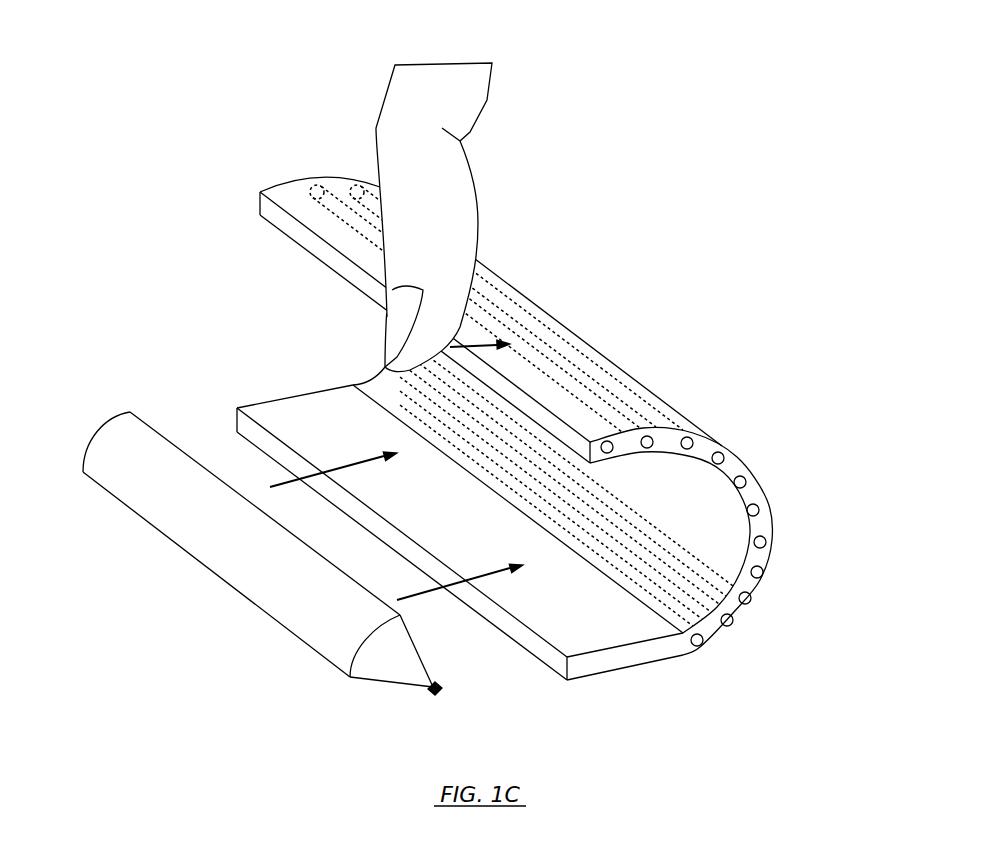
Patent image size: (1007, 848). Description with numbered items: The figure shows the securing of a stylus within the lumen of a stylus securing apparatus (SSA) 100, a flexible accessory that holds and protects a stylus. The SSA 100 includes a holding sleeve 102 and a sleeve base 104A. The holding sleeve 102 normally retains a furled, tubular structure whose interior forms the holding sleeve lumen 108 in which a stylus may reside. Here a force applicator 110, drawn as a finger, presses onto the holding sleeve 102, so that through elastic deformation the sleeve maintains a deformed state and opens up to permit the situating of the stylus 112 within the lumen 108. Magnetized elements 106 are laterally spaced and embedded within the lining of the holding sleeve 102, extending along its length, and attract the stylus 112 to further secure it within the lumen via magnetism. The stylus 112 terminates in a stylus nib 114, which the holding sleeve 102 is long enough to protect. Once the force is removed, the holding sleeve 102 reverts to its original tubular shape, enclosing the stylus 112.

The stylus securing apparatus (SSA) 100 is at (593, 400).
The holding sleeve 102 is at (593, 472).
The sleeve base 104A is at (832, 672).
The magnetized elements 106 is at (740, 457).
The holding sleeve lumen 108 is at (730, 510).
The force applicator 110 is at (370, 99).
The stylus 112 is at (261, 578).
The stylus nib 114 is at (416, 697).